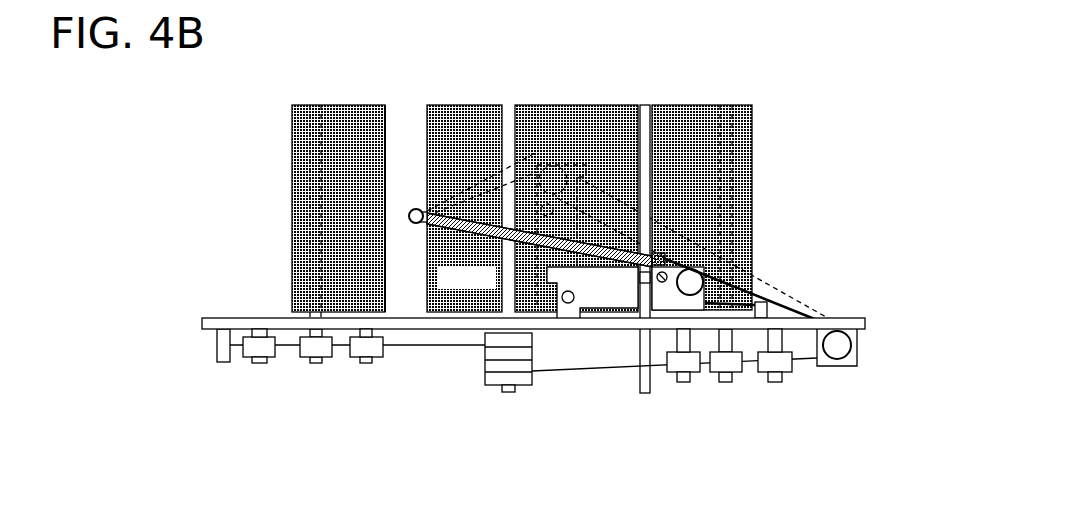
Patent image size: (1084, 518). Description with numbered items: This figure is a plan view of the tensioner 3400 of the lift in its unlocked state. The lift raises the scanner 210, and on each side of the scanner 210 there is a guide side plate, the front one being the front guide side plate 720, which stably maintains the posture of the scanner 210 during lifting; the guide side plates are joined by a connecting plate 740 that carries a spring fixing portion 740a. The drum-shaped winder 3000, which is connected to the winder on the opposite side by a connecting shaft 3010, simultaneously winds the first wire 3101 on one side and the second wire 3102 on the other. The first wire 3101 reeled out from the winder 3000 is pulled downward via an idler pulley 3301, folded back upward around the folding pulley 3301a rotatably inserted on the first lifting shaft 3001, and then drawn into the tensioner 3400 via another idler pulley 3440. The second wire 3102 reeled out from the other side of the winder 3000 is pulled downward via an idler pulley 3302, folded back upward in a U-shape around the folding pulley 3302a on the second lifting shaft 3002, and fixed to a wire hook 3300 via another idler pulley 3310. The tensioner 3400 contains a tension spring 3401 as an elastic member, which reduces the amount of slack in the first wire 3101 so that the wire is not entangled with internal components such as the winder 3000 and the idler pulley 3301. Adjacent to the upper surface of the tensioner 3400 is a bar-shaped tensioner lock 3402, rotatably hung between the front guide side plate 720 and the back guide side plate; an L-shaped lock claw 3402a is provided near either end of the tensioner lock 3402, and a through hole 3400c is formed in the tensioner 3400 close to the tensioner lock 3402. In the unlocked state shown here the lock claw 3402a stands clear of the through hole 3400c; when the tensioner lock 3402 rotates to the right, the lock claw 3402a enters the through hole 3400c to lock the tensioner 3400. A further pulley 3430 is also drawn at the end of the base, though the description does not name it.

The scanner 210 is at (292, 140).
The connecting plate 740 is at (393, 145).
The spring fixing portion 740a is at (409, 213).
The front guide side plate 720 is at (235, 317).
The winder 3000 is at (493, 390).
The first lifting shaft 3001 is at (733, 150).
The second lifting shaft 3002 is at (310, 230).
The connecting shaft 3010 is at (510, 137).
The first wire 3101 is at (748, 365).
The second wire 3102 is at (346, 348).
The wire hook 3300 is at (758, 318).
The idler pulley 3301 is at (672, 382).
The folding pulley 3301a is at (716, 380).
The idler pulley 3302 is at (383, 364).
The folding pulley 3302a is at (300, 365).
The idler pulley 3310 is at (245, 358).
The tensioner 3400 is at (602, 282).
The through hole 3400c is at (662, 283).
The tension spring 3401 is at (470, 237).
The tensioner lock 3402 is at (650, 175).
The lock claw 3402a is at (662, 253).
The drive pulley 3430 is at (852, 345).
The idler pulley 3440 is at (787, 378).